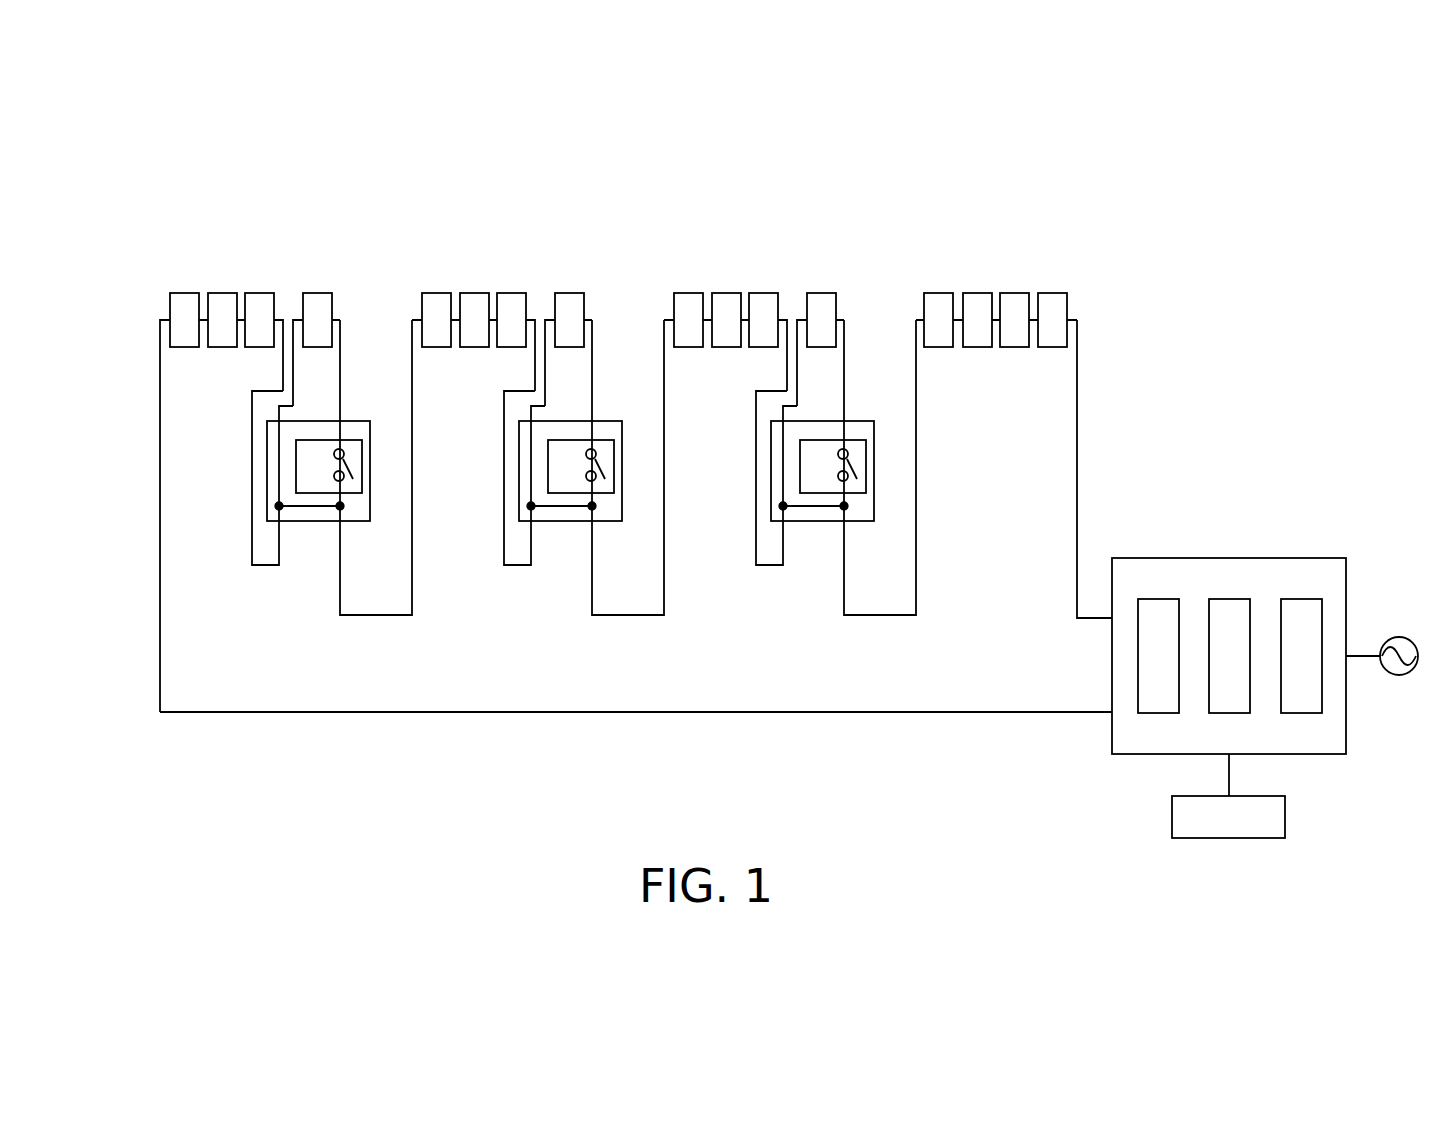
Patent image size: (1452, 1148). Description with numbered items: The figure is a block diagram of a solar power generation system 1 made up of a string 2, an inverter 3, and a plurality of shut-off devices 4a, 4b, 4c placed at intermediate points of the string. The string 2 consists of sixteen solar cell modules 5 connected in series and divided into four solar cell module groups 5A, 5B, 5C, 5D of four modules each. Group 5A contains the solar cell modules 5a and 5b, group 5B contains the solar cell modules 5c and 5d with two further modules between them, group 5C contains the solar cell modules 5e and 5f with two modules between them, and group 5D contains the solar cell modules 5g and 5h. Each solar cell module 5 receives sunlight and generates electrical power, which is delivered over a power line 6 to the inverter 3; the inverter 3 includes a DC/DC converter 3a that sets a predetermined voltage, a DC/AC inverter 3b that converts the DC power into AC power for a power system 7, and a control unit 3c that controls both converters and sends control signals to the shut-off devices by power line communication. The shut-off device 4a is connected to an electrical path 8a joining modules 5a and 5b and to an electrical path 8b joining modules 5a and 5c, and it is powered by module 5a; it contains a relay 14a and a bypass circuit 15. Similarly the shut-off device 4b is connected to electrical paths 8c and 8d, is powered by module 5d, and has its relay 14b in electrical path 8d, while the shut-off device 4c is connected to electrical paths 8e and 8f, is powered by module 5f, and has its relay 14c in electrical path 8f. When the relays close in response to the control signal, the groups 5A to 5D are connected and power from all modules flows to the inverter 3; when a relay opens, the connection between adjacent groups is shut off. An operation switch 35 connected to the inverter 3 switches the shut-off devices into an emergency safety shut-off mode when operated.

The solar power generation system 1 is at (1245, 235).
The string 2 is at (1007, 143).
The inverter 3 is at (1215, 590).
The DC/DC converter 3a is at (1159, 599).
The DC/AC inverter 3b is at (1230, 599).
The control unit 3c is at (1302, 599).
The shut-off device 4a is at (333, 513).
The shut-off device 4b is at (585, 513).
The shut-off device 4c is at (837, 513).
The solar cell module 5 is at (182, 293).
The solar cell module group 5A is at (338, 198).
The solar cell module group 5B is at (590, 198).
The solar cell module group 5C is at (842, 198).
The solar cell module group 5D is at (1077, 198).
The solar cell module 5a is at (318, 293).
The solar cell module 5b is at (262, 293).
The solar cell module 5c is at (434, 293).
The solar cell module 5d is at (569, 293).
The solar cell module 5e is at (686, 293).
The solar cell module 5f is at (821, 293).
The solar cell module 5g is at (936, 293).
The solar cell module 5h is at (977, 293).
The power line 6 is at (1077, 400).
The power system 7 is at (1398, 636).
The electrical path 8a is at (250, 533).
The electrical path 8b is at (377, 617).
The electrical path 8c is at (502, 533).
The electrical path 8d is at (629, 617).
The electrical path 8e is at (754, 533).
The electrical path 8f is at (881, 617).
The relay 14a is at (350, 440).
The relay 14b is at (602, 440).
The relay 14c is at (854, 440).
The bypass circuit 15 is at (313, 510).
The operation switch 35 is at (1285, 817).